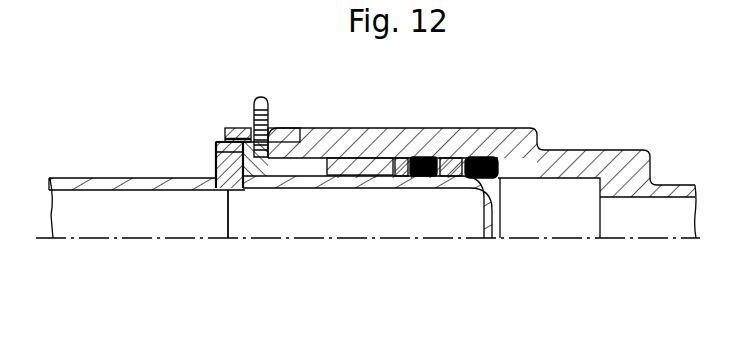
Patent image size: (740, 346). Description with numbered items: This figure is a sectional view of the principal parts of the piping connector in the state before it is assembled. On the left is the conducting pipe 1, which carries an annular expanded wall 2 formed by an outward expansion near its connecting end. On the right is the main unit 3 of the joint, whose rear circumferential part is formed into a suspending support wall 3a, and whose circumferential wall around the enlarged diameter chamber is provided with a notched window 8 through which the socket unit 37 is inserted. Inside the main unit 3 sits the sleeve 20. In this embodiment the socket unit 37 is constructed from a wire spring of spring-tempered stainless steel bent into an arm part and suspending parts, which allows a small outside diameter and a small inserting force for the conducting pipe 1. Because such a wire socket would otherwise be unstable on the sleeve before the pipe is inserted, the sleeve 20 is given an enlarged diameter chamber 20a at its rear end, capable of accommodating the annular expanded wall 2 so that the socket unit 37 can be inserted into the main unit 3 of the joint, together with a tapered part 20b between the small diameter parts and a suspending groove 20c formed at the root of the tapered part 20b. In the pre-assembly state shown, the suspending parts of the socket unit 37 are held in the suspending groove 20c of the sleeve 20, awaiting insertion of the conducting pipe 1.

The conducting pipe 1 is at (94, 178).
The annular expanded wall 2 is at (216, 166).
The main unit of the joint 3 is at (583, 162).
The suspending support wall 3a is at (243, 128).
The notched window 8 is at (271, 130).
The sleeve 20 is at (323, 135).
The enlarged diameter chamber 20a is at (218, 145).
The tapered part 20b is at (246, 188).
The suspending groove 20c is at (268, 176).
The socket unit 37 is at (256, 96).